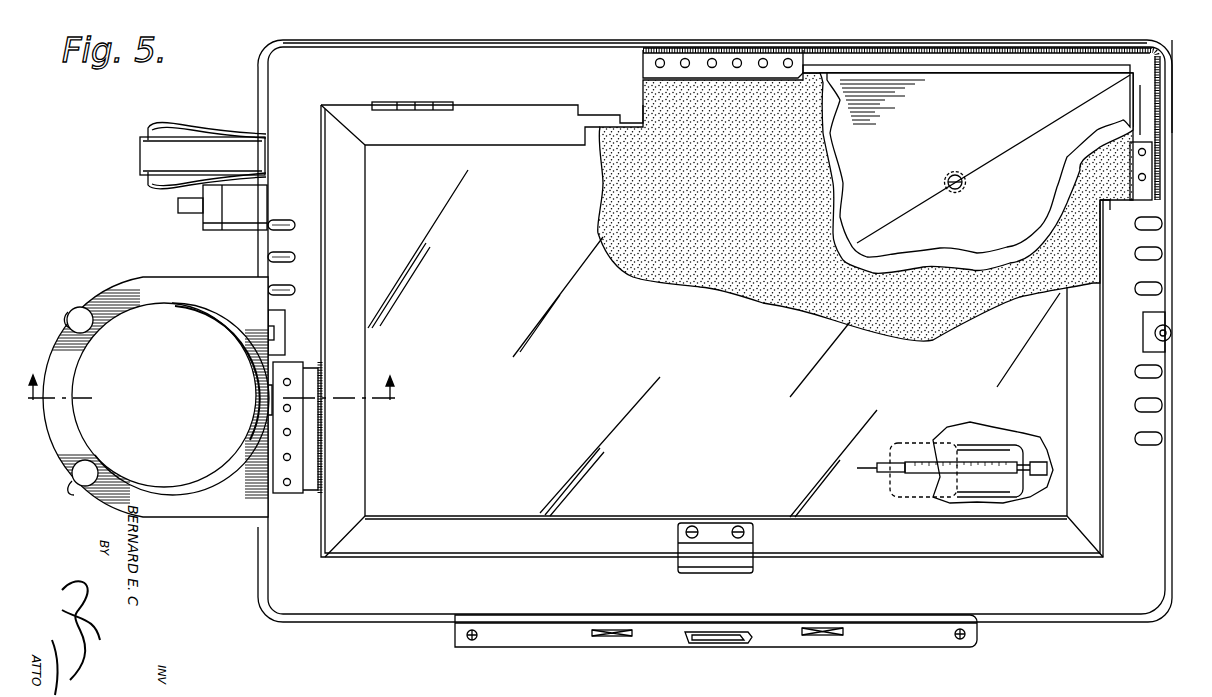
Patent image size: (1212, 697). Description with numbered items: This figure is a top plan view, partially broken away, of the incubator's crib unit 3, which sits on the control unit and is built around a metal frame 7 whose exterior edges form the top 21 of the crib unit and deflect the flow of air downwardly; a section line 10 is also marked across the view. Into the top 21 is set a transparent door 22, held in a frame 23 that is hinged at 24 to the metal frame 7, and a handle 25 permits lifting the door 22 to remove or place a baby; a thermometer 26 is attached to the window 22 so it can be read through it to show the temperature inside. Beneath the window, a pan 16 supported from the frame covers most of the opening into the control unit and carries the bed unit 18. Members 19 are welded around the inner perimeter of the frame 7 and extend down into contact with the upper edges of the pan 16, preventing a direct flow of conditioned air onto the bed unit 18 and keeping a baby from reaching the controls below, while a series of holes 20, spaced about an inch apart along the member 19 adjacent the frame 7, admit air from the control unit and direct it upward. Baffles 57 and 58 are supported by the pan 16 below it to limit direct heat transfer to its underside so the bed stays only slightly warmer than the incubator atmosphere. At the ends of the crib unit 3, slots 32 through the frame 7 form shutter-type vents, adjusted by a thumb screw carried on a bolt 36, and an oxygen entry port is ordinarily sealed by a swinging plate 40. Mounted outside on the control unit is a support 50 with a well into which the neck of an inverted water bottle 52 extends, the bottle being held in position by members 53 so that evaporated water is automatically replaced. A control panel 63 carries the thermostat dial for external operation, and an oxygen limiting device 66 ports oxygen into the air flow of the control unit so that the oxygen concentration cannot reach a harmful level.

The crib unit 3 is at (392, 603).
The metal frame 7 is at (1052, 598).
The section line 10 is at (214, 366).
The pan 16 is at (905, 262).
The bed unit 18 is at (733, 294).
The member 19 is at (300, 422).
The holes 20 is at (763, 63).
The top 21 is at (425, 78).
The transparent door 22 is at (537, 498).
The frame 23 is at (380, 123).
The hinge 24 is at (405, 100).
The handle 25 is at (701, 567).
The thermometer 26 is at (1003, 487).
The slots 32 is at (291, 224).
The bolt 36 is at (255, 324).
The swinging plate 40 is at (268, 170).
The support 50 is at (196, 508).
The water bottle 52 is at (165, 291).
The members 53 is at (70, 312).
The baffle 57 is at (978, 165).
The baffle 58 is at (915, 67).
The control panel 63 is at (888, 640).
The oxygen limiting device 66 is at (232, 234).